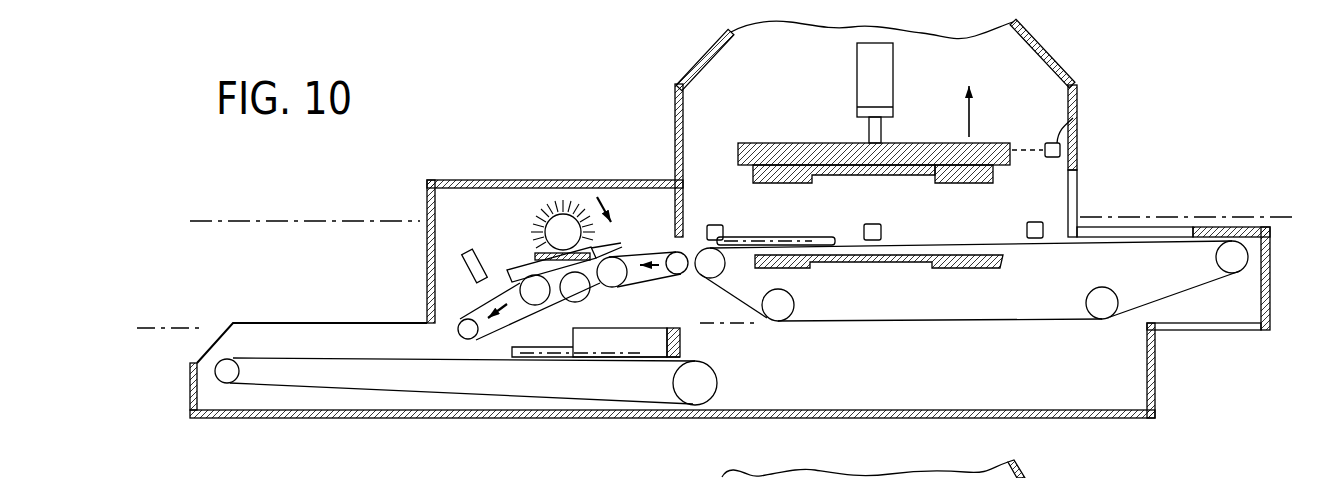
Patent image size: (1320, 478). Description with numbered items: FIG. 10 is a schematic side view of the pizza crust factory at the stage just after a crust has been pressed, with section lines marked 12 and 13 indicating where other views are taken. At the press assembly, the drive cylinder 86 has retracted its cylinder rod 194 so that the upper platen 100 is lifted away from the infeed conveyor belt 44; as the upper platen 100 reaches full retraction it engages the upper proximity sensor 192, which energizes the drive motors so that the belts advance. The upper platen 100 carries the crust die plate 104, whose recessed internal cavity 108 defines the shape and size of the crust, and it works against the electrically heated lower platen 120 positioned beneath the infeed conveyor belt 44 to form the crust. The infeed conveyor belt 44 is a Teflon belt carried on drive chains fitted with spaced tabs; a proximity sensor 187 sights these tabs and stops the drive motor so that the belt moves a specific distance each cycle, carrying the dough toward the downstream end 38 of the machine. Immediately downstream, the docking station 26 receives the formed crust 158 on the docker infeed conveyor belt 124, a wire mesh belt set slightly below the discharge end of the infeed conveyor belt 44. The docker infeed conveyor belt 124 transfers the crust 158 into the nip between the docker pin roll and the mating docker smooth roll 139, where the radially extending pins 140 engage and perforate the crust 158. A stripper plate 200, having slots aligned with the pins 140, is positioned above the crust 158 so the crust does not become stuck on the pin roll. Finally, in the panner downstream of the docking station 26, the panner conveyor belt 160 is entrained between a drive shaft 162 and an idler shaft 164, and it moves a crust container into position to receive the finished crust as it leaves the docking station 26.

The docking station 26 is at (511, 172).
The section line 12 is at (205, 221).
The section line 13 is at (155, 293).
The downstream end 38 is at (565, 228).
The pins 140 is at (534, 226).
The stripper plate 200 is at (629, 208).
The crust 158 is at (513, 270).
The docker smooth roll 139 is at (573, 292).
The docker infeed conveyor belt 124 is at (662, 281).
The panner conveyor belt 160 is at (344, 358).
The idler shaft 164 is at (227, 376).
The drive shaft 162 is at (698, 387).
The infeed conveyor belt 44 is at (900, 322).
The lower platen 120 is at (870, 269).
The proximity sensor 187 is at (713, 224).
The drive cylinder 86 is at (873, 90).
The cylinder rod 194 is at (878, 132).
The upper platen 100 is at (994, 156).
The crust die plate 104 is at (985, 185).
The recessed internal cavity 108 is at (907, 186).
The upper proximity sensor 192 is at (1080, 110).